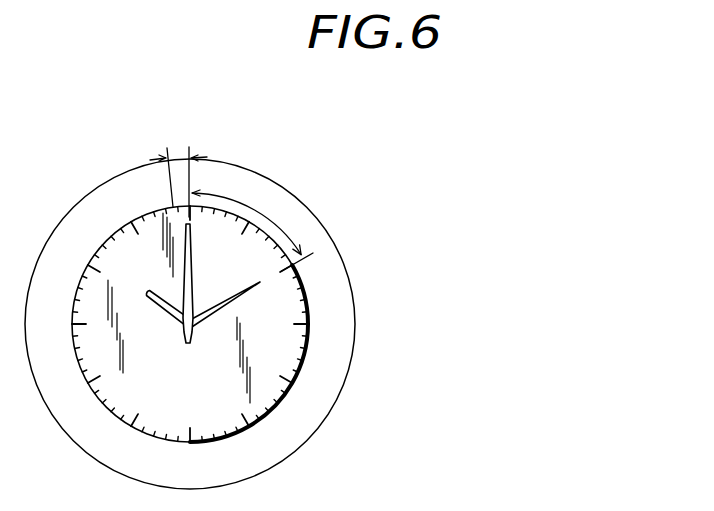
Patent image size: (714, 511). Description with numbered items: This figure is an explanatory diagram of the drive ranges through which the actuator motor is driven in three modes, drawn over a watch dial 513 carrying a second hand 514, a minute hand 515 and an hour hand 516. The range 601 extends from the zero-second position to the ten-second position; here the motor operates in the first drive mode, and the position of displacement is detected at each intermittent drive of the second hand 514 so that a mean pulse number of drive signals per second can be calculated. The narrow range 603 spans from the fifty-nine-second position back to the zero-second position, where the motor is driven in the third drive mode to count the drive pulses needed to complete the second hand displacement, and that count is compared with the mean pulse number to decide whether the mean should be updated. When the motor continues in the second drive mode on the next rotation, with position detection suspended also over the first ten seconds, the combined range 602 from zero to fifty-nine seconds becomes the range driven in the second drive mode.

The dial (clock face) 513 is at (292, 362).
The second hand 514 is at (193, 256).
The minute hand 515 is at (250, 294).
The hour hand 516 is at (172, 319).
The range of first drive mode 601 is at (258, 214).
The range of second drive mode 602 is at (307, 438).
The range of third drive mode 603 is at (181, 157).